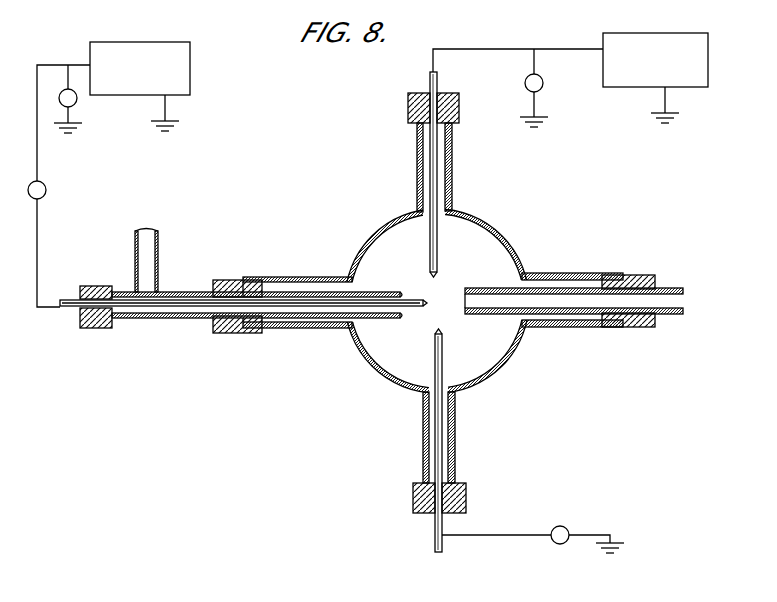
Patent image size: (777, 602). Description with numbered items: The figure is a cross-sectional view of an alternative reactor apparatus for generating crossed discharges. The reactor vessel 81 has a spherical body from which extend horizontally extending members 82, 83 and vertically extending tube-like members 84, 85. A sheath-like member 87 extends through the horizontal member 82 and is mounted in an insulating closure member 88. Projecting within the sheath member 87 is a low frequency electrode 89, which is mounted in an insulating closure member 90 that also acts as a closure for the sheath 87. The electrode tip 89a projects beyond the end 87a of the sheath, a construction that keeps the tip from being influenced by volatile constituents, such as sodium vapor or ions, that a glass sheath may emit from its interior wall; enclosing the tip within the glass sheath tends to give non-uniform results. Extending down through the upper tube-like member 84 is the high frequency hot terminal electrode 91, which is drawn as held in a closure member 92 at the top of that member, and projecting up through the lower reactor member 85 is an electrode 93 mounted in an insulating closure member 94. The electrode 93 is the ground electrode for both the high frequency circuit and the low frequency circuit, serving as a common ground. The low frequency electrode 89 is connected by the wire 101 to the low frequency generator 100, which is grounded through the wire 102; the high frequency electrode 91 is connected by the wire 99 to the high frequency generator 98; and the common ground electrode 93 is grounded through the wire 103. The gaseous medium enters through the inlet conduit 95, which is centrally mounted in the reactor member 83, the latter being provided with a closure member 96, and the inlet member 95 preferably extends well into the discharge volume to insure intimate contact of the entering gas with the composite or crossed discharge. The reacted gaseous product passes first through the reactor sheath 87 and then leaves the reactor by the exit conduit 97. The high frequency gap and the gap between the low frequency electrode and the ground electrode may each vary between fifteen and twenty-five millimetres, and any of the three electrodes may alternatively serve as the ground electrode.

The reactor vessel 81 is at (318, 275).
The horizontally extending member 82 is at (318, 329).
The horizontally extending member 83 is at (560, 274).
The vertically extending tube-like member 84 is at (453, 170).
The vertically extending tube-like member 85 is at (456, 421).
The sheath-like member 87 is at (172, 320).
The end of the sheath 87a is at (400, 320).
The insulating closure member 88 is at (228, 334).
The low frequency electrode 89 is at (188, 300).
The electrode tip 89a is at (414, 300).
The insulating closure member 90 is at (100, 329).
The high frequency hot terminal electrode 91 is at (432, 155).
The upper stopper 92 is at (408, 110).
The ground electrode 93 is at (436, 433).
The insulating closure member 94 is at (466, 493).
The inlet conduit 95 is at (671, 315).
The closure member 96 is at (645, 278).
The exit conduit 97 is at (159, 242).
The high frequency generator 98 is at (610, 89).
The wire 99 is at (510, 45).
The low frequency generator 100 is at (190, 55).
The wire 101 is at (47, 202).
The wire 102 is at (170, 107).
The wire 103 is at (525, 535).